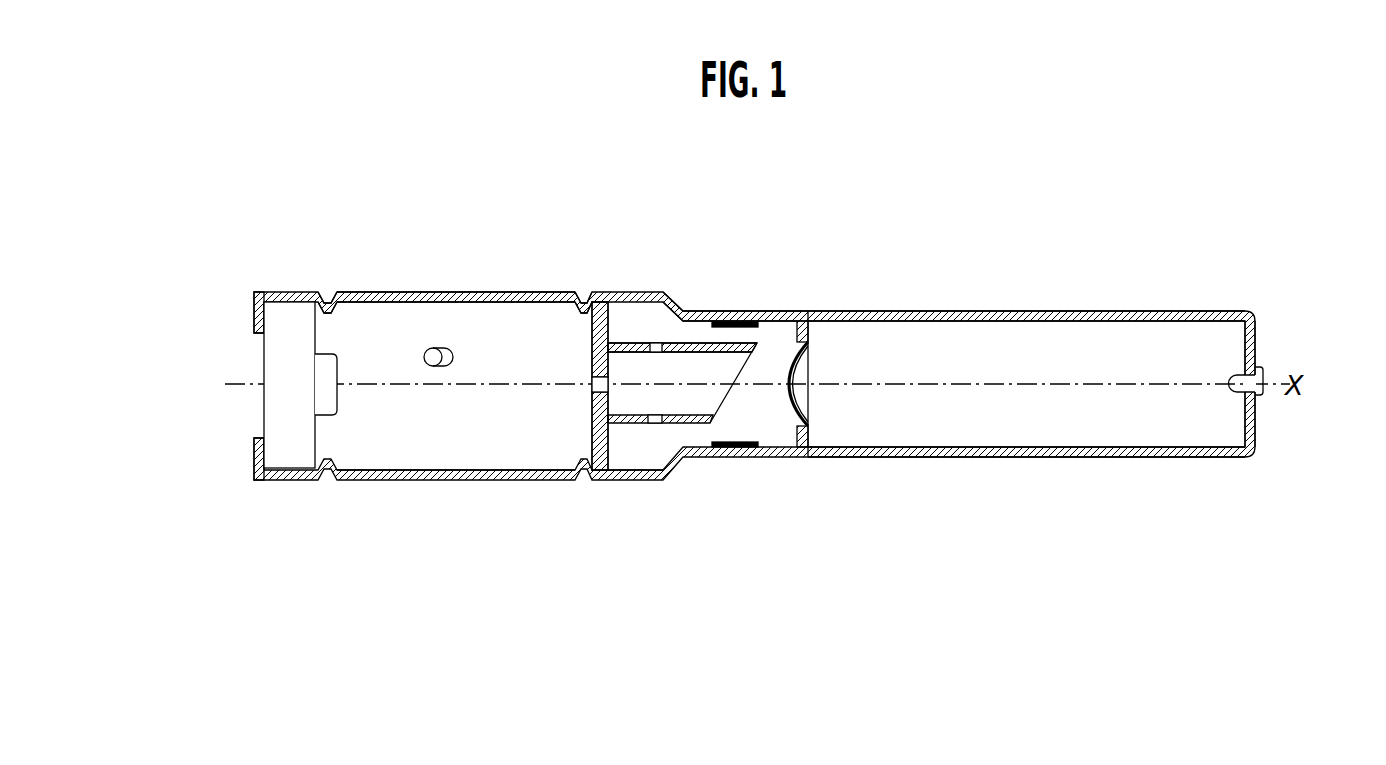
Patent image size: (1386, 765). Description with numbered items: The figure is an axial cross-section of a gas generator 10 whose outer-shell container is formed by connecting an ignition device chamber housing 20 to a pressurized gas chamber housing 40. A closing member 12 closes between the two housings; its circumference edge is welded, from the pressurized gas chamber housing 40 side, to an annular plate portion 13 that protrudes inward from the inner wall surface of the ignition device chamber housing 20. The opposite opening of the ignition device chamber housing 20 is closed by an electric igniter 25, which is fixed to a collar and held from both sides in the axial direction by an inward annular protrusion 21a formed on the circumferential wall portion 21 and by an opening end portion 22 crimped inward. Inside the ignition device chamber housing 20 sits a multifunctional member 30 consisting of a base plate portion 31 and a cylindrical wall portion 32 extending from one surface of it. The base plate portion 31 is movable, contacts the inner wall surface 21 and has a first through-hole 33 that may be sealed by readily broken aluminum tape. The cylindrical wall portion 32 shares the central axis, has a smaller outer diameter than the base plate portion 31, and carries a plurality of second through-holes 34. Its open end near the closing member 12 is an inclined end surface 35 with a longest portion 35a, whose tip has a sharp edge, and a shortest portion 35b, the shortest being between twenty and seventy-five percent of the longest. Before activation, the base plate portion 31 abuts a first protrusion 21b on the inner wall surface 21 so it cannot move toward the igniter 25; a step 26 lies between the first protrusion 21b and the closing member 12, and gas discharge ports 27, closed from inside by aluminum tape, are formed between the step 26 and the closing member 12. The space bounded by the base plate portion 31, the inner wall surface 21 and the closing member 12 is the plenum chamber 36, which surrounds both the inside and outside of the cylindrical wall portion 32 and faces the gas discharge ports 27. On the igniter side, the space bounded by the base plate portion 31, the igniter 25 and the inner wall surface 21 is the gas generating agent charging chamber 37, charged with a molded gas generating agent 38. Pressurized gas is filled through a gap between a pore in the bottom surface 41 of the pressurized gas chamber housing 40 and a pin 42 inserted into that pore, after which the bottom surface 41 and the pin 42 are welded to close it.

The gas generator 10 is at (902, 278).
The closing member 12 is at (812, 355).
The annular plate portion 13 is at (798, 330).
The ignition device chamber housing 20 is at (381, 292).
The circumferential wall portion 21 is at (500, 296).
The inward annular protrusion 21a is at (325, 306).
The first protrusion 21b is at (588, 305).
The opening end portion 22 is at (254, 302).
The electric igniter 25 is at (276, 362).
The step 26 is at (656, 343).
The gas discharge ports 27 is at (731, 312).
The multifunctional member 30 is at (606, 302).
The base plate portion 31 is at (599, 478).
The cylindrical wall portion 32 is at (682, 430).
The first through-hole 33 is at (594, 376).
The second through-holes 34 is at (623, 334).
The inclined end surface 35 is at (737, 385).
The longest portion 35a is at (760, 340).
The shortest portion 35b is at (734, 448).
The plenum chamber 36 is at (633, 455).
The gas generating agent charging chamber 37 is at (410, 437).
The gas generating agent 38 is at (443, 350).
The pressurized gas chamber housing 40 is at (1050, 311).
The bottom surface 41 is at (1256, 340).
The pin 42 is at (1263, 396).